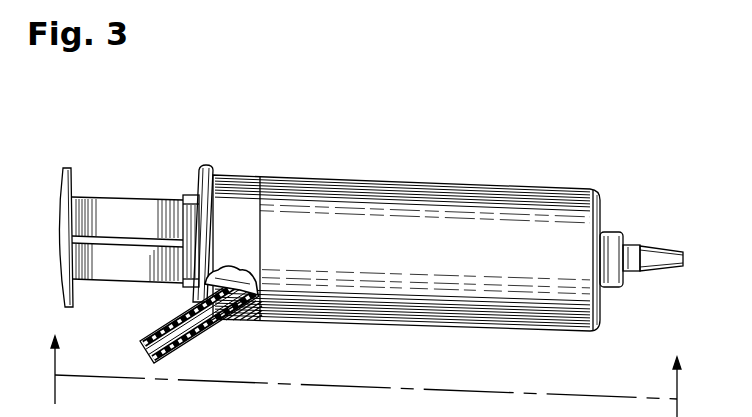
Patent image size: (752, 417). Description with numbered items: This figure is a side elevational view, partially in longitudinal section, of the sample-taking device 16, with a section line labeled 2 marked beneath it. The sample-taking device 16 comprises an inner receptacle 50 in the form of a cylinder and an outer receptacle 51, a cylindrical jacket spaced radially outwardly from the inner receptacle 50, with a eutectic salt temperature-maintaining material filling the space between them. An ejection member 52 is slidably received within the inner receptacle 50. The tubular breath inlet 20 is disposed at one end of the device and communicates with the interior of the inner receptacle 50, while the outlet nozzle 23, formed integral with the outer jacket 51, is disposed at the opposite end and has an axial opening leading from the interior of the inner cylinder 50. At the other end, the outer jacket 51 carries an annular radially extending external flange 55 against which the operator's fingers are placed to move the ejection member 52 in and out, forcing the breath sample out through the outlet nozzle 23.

The sample-taking device 16 is at (420, 177).
The outer receptacle 51 is at (293, 180).
The external flange 55 is at (206, 168).
The inner receptacle 50 is at (190, 194).
The ejection member 52 is at (105, 204).
The outlet nozzle 23 is at (660, 251).
The tubular breath inlet 20 is at (172, 313).
The section line 2- 2 is at (363, 375).